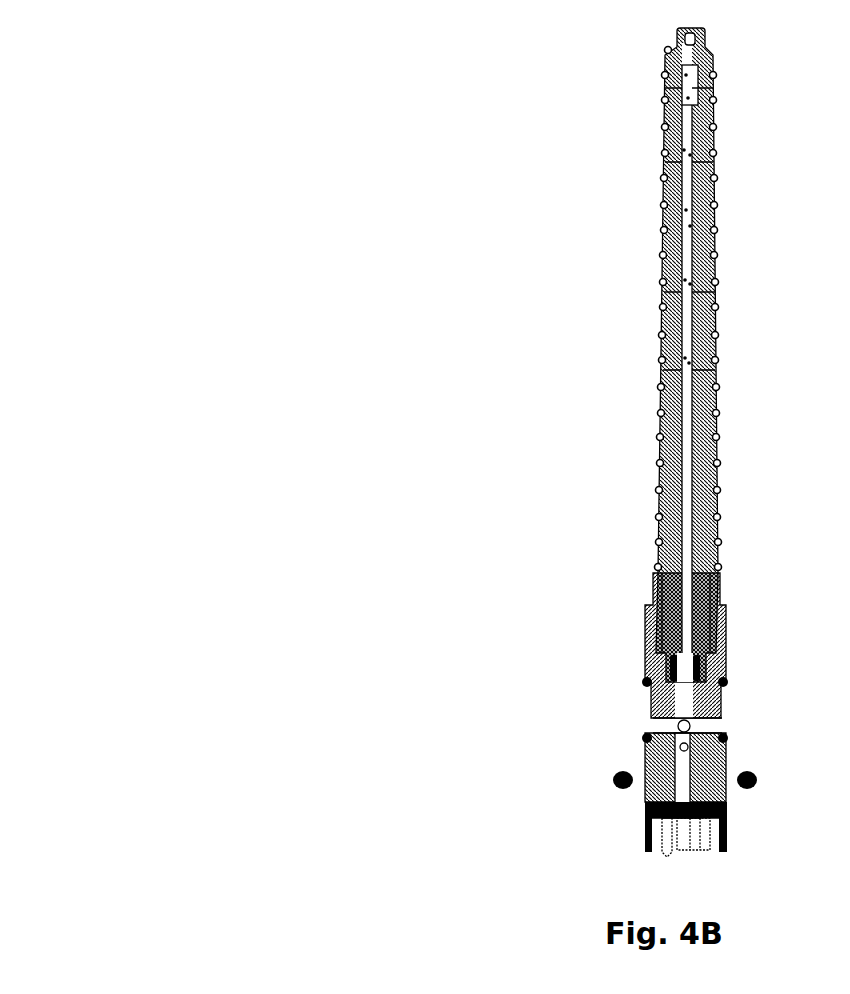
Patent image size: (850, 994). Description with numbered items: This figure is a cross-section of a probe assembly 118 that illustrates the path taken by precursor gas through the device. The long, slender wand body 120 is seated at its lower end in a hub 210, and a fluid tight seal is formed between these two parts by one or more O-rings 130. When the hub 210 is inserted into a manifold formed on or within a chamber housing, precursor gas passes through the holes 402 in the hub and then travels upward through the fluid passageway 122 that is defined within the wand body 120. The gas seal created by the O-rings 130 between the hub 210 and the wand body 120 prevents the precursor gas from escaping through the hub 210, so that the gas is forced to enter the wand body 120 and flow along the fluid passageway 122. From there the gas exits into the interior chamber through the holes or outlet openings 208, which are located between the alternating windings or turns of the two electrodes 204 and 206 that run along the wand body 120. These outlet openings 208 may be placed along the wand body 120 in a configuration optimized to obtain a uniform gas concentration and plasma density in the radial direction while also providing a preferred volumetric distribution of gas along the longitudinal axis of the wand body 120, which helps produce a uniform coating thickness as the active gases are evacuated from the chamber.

The probe assembly 118 is at (180, 752).
The wand body 120 is at (658, 498).
The fluid passageway 122 is at (683, 628).
The O-ring 130 is at (643, 680).
The electrode 204 is at (715, 357).
The electrode 206 is at (662, 358).
The holes or outlet openings 208 is at (660, 283).
The hub 210 is at (645, 738).
The holes 402 is at (723, 723).